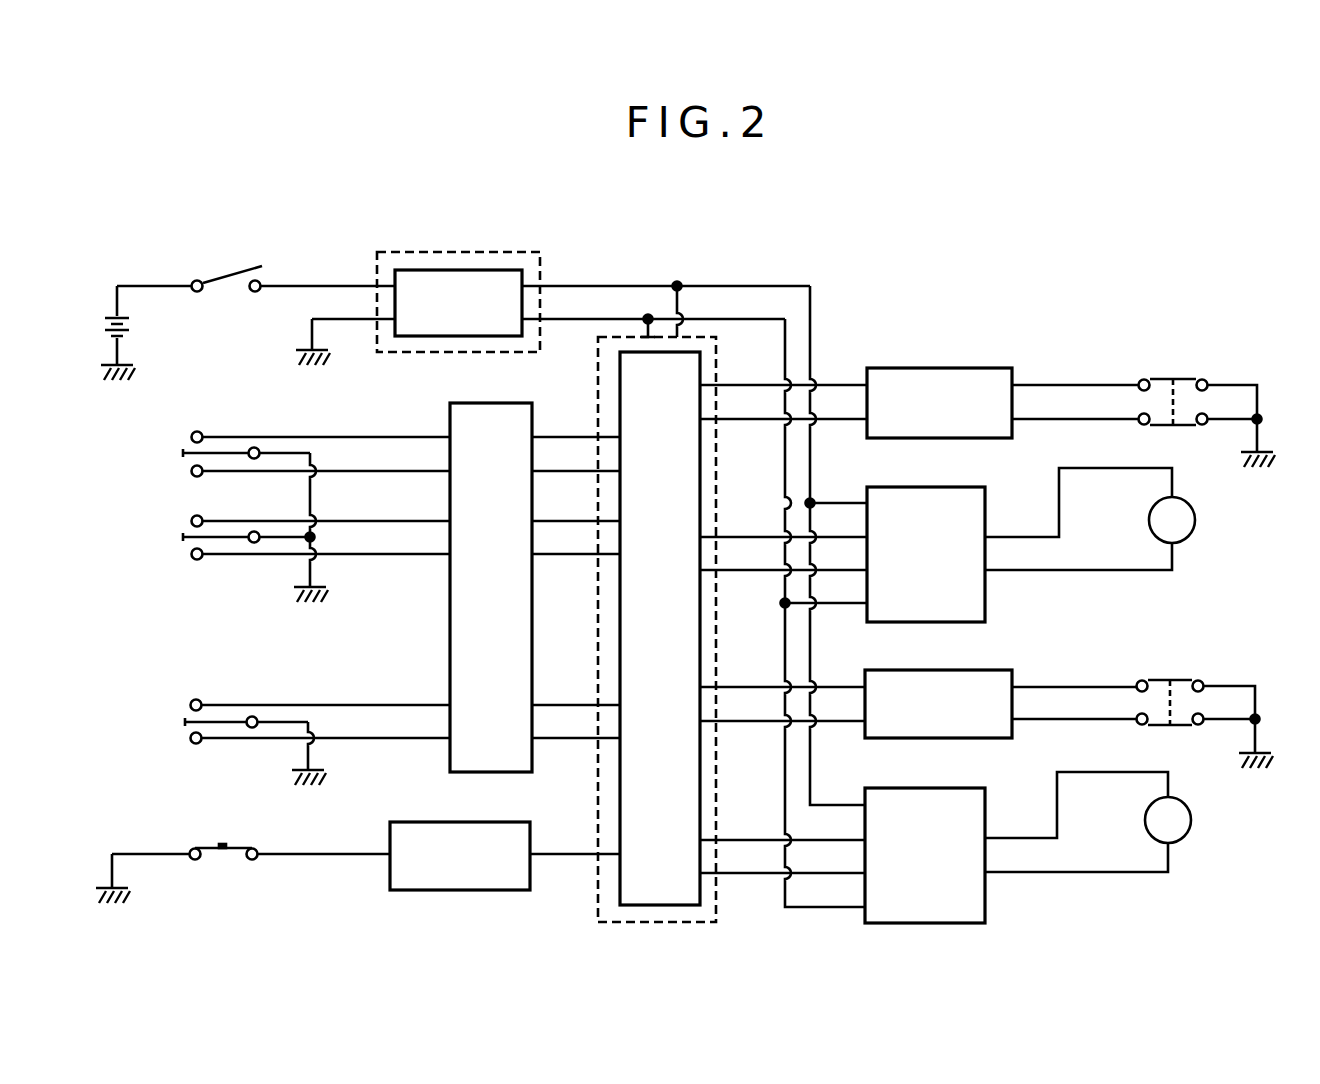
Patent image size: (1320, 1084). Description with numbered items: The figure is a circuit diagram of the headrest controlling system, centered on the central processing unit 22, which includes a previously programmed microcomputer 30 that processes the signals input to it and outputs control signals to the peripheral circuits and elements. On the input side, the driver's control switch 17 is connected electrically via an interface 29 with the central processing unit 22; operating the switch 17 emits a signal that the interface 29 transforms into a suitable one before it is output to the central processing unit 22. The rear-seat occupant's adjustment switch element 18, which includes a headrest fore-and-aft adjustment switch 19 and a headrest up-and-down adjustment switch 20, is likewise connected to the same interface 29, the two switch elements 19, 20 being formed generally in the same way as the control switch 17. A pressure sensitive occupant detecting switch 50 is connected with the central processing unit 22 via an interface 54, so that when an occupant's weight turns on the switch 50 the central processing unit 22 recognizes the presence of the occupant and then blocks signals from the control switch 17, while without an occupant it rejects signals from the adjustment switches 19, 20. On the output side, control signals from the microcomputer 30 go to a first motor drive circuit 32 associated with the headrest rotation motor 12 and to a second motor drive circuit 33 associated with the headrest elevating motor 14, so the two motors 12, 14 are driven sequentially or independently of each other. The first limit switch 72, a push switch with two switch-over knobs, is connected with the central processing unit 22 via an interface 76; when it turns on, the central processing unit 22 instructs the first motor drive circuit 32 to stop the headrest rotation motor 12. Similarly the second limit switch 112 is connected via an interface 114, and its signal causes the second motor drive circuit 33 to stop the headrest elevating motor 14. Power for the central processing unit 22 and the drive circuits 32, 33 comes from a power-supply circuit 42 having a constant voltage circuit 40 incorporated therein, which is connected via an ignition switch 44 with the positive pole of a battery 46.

The headrest rotation motor 12 is at (1196, 519).
The headrest elevating motor 14 is at (1192, 819).
The driver's control switch 17 is at (190, 707).
The rear-seat occupant's adjustment switch element 18 is at (202, 458).
The headrest fore-and-aft adjustment switch 19 is at (191, 444).
The headrest up-and-down adjustment switch 20 is at (191, 527).
The central processing unit 22 is at (721, 365).
The interface 29 is at (532, 410).
The microcomputer 30 is at (622, 378).
The first motor drive circuit 32 is at (960, 489).
The second motor drive circuit 33 is at (960, 788).
The constant voltage circuit 40 is at (477, 268).
The power-supply circuit 42 is at (512, 251).
The ignition switch 44 is at (236, 276).
The battery 46 is at (114, 317).
The occupant detecting switch 50 is at (250, 848).
The interface 54 is at (505, 892).
The first limit switch 72 is at (1196, 375).
The interface 76 is at (936, 368).
The second limit switch 112 is at (1192, 678).
The interface 114 is at (966, 670).